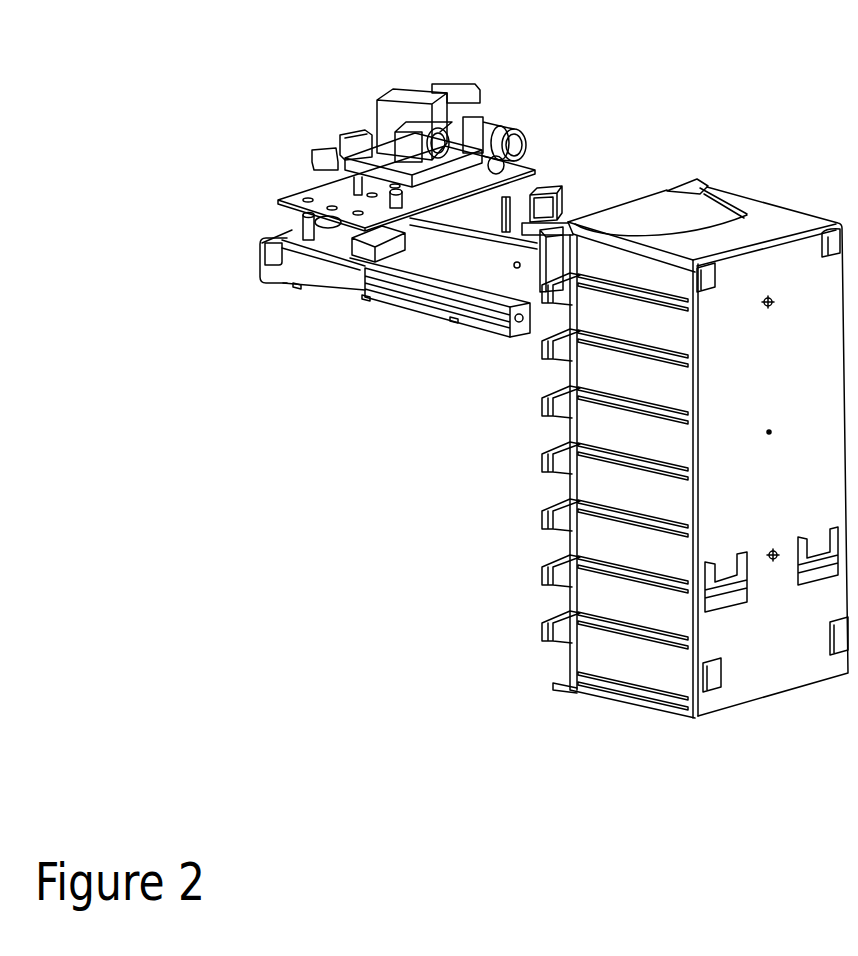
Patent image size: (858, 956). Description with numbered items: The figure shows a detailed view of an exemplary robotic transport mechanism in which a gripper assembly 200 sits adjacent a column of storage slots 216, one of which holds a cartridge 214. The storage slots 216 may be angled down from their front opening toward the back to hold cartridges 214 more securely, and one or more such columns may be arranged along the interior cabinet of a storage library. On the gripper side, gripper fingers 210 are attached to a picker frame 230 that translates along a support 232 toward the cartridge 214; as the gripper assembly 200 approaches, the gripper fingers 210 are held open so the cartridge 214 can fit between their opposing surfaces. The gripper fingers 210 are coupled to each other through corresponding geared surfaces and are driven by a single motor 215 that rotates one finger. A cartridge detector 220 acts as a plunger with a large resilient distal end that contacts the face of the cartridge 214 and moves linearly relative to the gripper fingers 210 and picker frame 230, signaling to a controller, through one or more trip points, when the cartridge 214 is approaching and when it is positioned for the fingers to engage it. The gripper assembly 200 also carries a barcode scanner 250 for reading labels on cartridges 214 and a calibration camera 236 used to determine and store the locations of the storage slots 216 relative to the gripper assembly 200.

The gripper assembly 200 is at (608, 182).
The gripper fingers 210 is at (557, 197).
The cartridge 214 is at (665, 215).
The motor 215 is at (410, 100).
The storage slots 216 is at (524, 594).
The cartridge detector 220 is at (537, 188).
The picker frame 230 is at (340, 263).
The support 232 is at (478, 310).
The calibration camera 236 is at (512, 125).
The barcode scanner 250 is at (407, 132).